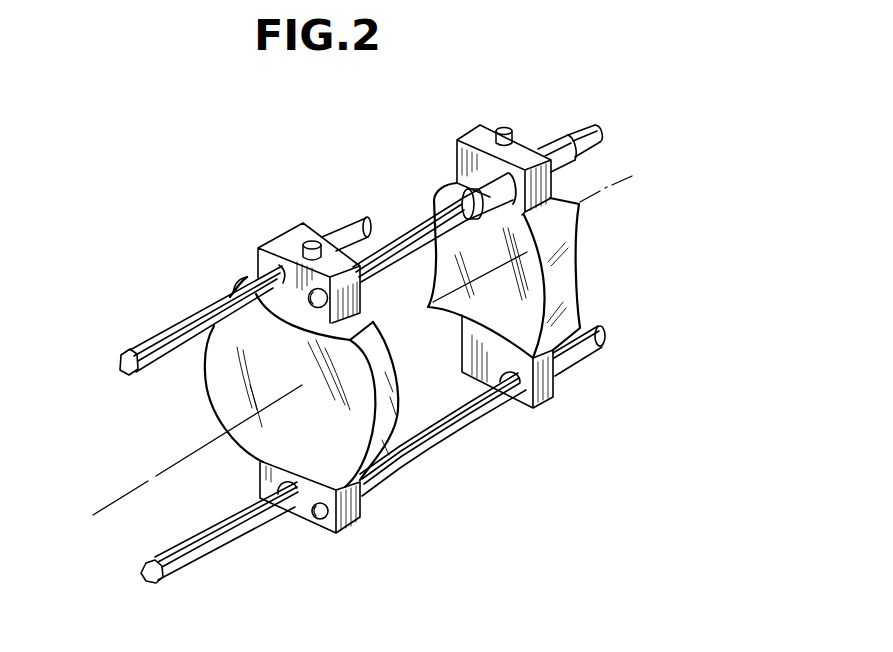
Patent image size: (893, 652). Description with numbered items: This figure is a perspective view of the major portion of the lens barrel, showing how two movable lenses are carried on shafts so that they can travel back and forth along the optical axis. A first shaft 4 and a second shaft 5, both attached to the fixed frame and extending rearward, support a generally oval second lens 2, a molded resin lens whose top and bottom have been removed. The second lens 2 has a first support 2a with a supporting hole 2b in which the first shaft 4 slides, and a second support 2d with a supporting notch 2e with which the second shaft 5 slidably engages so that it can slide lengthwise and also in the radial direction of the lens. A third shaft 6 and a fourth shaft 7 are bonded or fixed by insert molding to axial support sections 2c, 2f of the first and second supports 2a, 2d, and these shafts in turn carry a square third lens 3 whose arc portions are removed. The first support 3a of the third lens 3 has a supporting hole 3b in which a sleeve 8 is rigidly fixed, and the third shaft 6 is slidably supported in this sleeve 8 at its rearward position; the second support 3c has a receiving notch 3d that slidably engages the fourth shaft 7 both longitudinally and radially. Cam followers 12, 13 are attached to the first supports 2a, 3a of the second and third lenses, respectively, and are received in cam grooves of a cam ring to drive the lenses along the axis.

The second lens 2 is at (258, 443).
The first support 2a is at (282, 245).
The supporting hole 2b is at (267, 263).
The axial support section 2c is at (322, 294).
The second support 2d is at (350, 512).
The supporting notch 2e is at (292, 507).
The axial support section 2f is at (318, 519).
The third lens 3 is at (563, 320).
The first support 3a is at (490, 147).
The supporting hole 3b is at (490, 165).
The second support 3c is at (548, 394).
The receiving notch 3d is at (513, 400).
The first shaft 4 is at (145, 350).
The second shaft 5 is at (173, 555).
The third shaft 6 is at (392, 247).
The fourth shaft 7 is at (457, 425).
The sleeve 8 is at (462, 193).
The cam follower 12 is at (310, 242).
The cam follower 13 is at (510, 130).